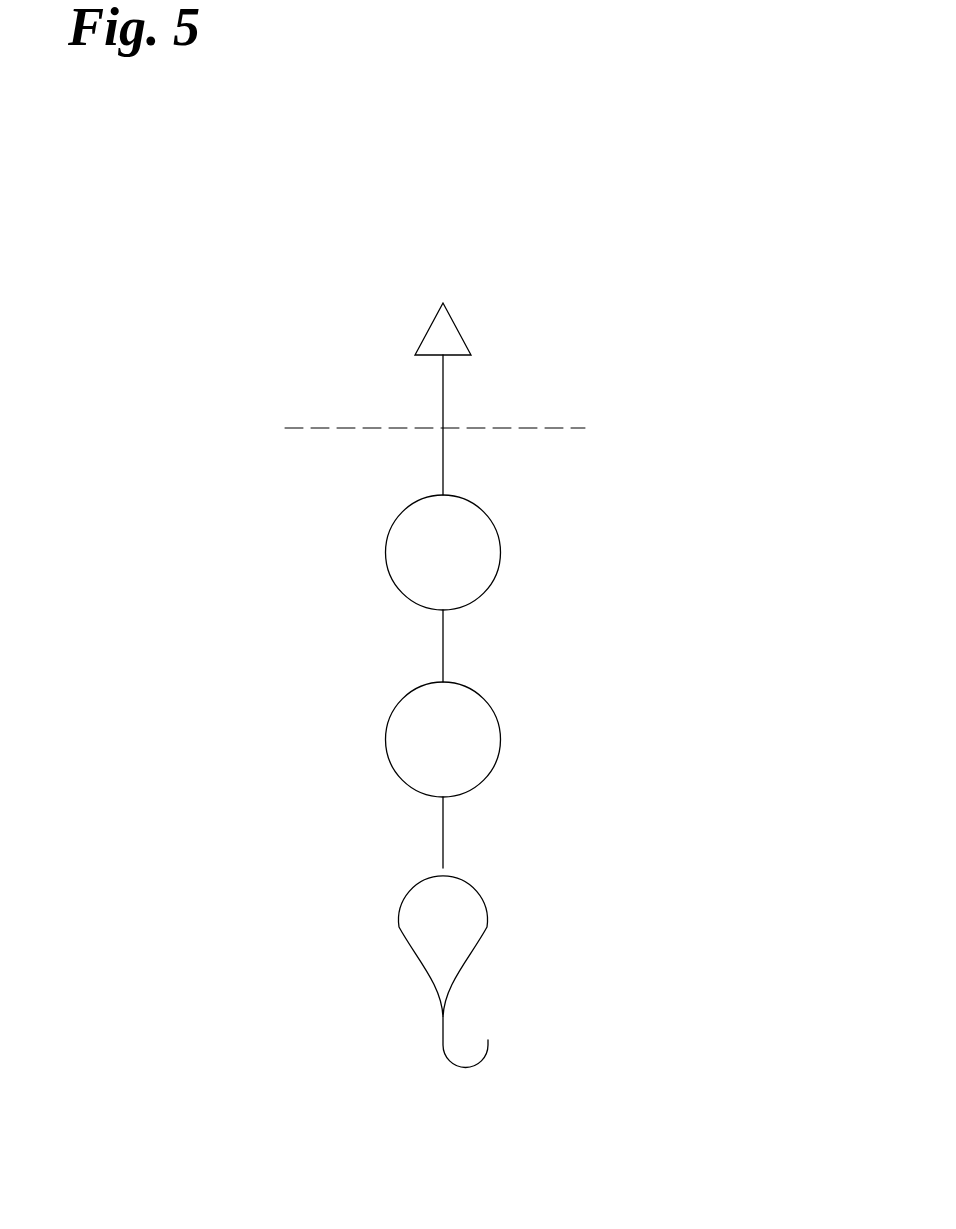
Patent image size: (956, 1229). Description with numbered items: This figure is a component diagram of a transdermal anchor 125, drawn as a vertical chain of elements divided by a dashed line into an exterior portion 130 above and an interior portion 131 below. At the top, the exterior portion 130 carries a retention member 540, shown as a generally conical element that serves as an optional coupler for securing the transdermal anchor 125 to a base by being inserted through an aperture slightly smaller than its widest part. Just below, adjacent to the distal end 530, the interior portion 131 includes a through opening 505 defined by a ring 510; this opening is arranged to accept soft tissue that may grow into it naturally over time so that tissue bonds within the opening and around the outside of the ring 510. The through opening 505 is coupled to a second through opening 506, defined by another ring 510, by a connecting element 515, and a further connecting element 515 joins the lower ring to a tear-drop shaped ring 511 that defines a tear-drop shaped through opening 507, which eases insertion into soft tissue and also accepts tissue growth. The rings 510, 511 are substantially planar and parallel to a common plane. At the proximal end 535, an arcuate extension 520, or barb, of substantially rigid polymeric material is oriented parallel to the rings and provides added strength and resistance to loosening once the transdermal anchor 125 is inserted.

The transdermal anchor 125 is at (702, 215).
The exterior portion 130 is at (388, 392).
The interior portion 131 is at (367, 647).
The through opening 505 is at (462, 542).
The second through opening 506 is at (405, 732).
The tear-drop shaped through opening 507 is at (456, 935).
The ring 510 is at (502, 568).
The tear-drop shaped ring 511 is at (487, 927).
The connecting element 515 is at (445, 630).
The arcuate extension 520 is at (483, 1062).
The distal end 530 is at (457, 285).
The proximal end 535 is at (435, 1067).
The retention member 540 is at (435, 343).